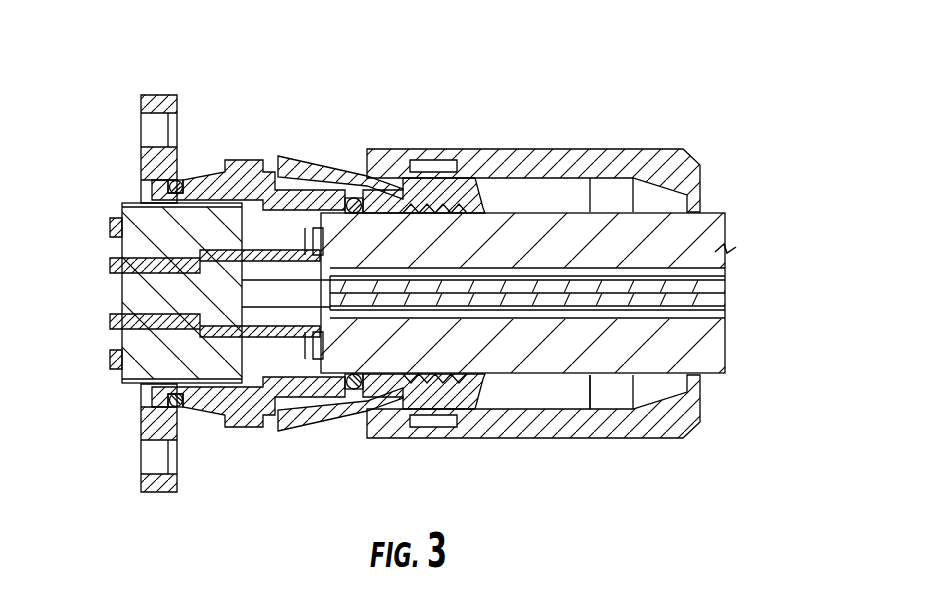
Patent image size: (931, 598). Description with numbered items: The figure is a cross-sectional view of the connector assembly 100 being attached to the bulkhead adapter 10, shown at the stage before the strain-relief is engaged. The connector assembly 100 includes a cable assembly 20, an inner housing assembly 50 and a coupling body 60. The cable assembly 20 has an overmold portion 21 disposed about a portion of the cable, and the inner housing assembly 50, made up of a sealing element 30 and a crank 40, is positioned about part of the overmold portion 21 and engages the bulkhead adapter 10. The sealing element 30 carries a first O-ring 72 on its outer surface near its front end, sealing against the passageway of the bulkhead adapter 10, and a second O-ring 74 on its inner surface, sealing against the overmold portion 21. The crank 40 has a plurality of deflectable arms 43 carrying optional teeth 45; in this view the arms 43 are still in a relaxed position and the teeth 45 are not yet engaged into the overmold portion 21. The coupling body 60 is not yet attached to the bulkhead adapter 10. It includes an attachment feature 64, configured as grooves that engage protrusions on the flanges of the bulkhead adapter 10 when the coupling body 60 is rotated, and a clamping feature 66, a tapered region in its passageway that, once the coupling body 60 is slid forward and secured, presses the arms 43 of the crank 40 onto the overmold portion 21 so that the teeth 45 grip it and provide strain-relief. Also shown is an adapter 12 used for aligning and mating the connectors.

The connector assembly 100 is at (551, 74).
The bulkhead adapter 10 is at (155, 102).
The adapter 12 is at (228, 287).
The cable assembly 20 is at (547, 332).
The overmold portion 21 is at (499, 345).
The sealing element 30 is at (276, 301).
The crank 40 is at (391, 299).
The arms 43 is at (342, 172).
The teeth 45 is at (432, 198).
The inner housing assembly 50 is at (336, 326).
The coupling body 60 is at (533, 302).
The attachment feature 64 is at (440, 418).
The clamping feature 66 is at (540, 410).
The first O-ring 72 is at (177, 180).
The second O-ring 74 is at (352, 390).